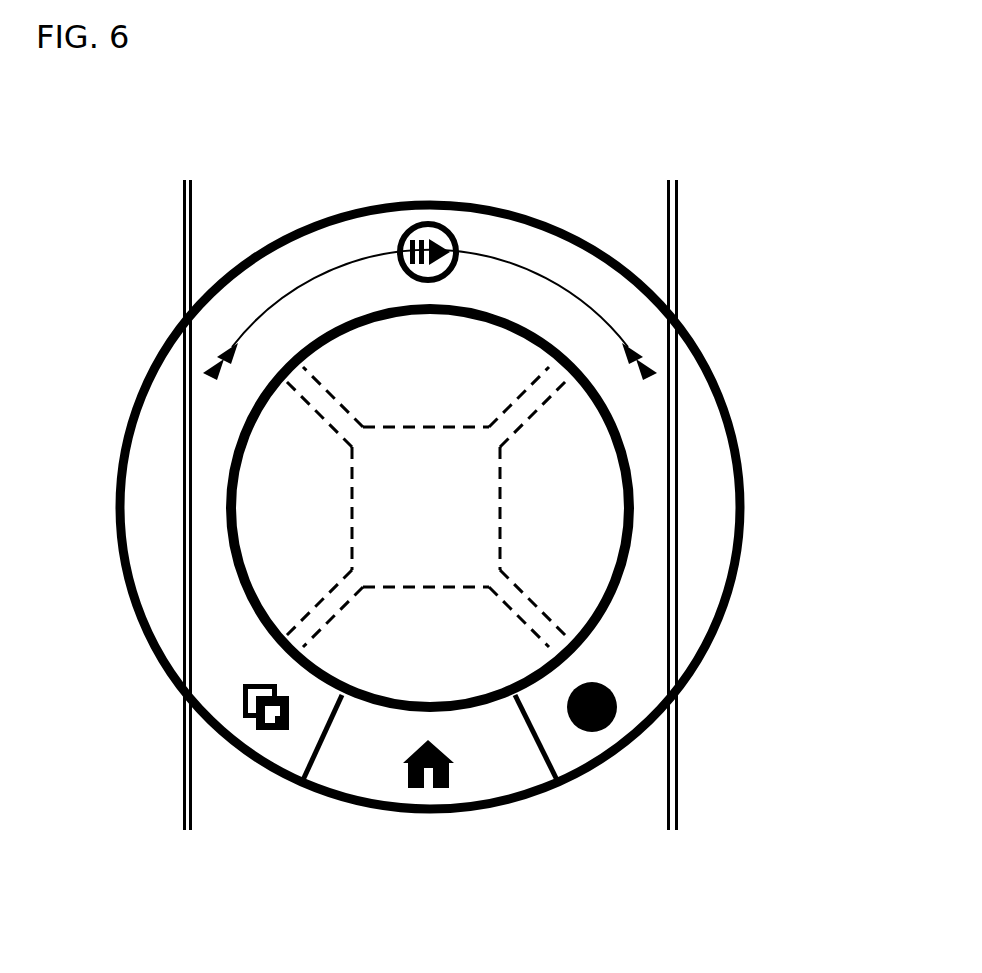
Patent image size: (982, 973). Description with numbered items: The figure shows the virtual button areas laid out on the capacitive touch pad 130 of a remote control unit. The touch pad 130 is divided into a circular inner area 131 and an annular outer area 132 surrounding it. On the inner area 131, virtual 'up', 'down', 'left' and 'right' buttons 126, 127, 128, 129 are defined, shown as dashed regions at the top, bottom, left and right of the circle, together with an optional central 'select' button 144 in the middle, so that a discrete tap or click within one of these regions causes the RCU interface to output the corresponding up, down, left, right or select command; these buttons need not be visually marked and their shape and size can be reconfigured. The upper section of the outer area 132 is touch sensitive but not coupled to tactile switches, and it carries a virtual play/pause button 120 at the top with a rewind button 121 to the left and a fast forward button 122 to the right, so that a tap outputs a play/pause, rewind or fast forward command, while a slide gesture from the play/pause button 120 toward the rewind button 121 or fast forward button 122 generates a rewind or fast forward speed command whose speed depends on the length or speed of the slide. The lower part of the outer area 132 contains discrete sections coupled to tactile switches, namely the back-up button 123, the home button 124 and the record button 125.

The play/pause button 120 is at (414, 225).
The rewind button 121 is at (213, 352).
The fast forward button 122 is at (647, 352).
The back-up button 123 is at (247, 698).
The home button 124 is at (405, 773).
The record button 125 is at (614, 713).
The virtual 'up' button 126 is at (450, 387).
The virtual 'down' button 127 is at (450, 656).
The virtual 'left' button 128 is at (313, 517).
The virtual 'right' button 129 is at (579, 517).
The capacitive touch pad 130 is at (682, 494).
The circular inner area 131 is at (232, 495).
The annular outer area 132 is at (203, 618).
The central 'select' button 144 is at (443, 517).